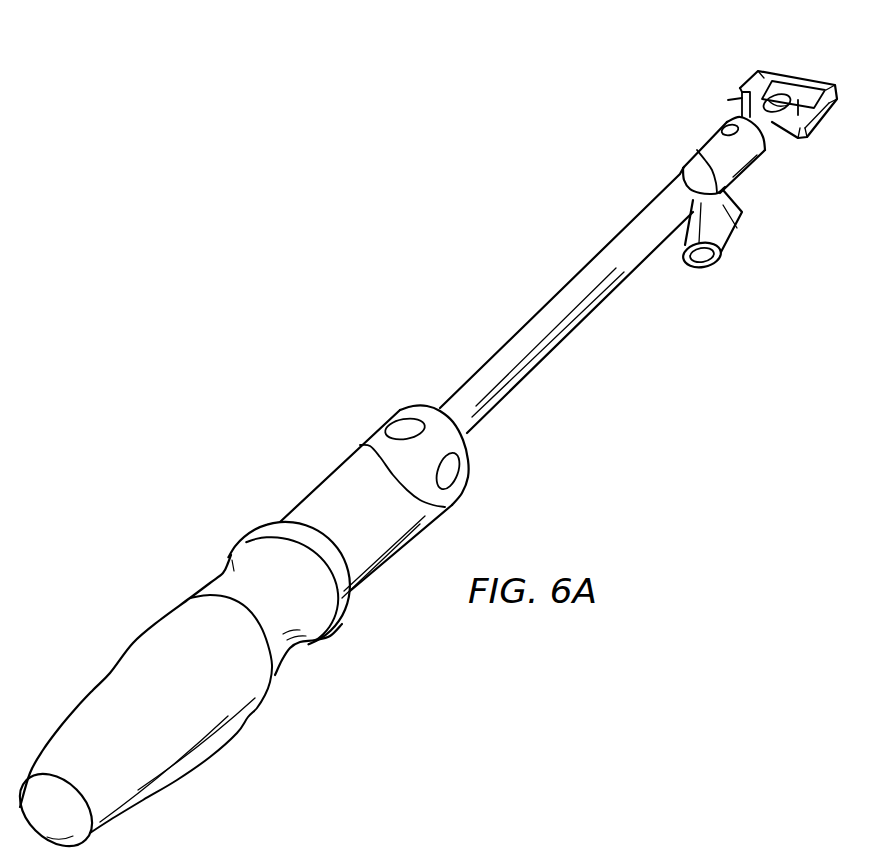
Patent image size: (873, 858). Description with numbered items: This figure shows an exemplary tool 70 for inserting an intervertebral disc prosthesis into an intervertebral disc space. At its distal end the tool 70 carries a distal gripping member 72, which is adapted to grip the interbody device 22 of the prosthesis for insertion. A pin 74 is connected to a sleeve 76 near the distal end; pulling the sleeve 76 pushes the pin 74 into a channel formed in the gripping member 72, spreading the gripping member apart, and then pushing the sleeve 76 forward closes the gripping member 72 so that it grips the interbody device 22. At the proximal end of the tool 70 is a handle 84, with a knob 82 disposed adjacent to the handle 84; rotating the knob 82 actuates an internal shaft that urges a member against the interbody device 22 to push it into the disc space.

The interbody device 22 is at (798, 73).
The tool 70 is at (526, 283).
The distal gripping member 72 is at (735, 98).
The pin 74 is at (727, 123).
The sleeve 76 is at (752, 162).
The knob 82 is at (330, 480).
The handle 84 is at (137, 651).